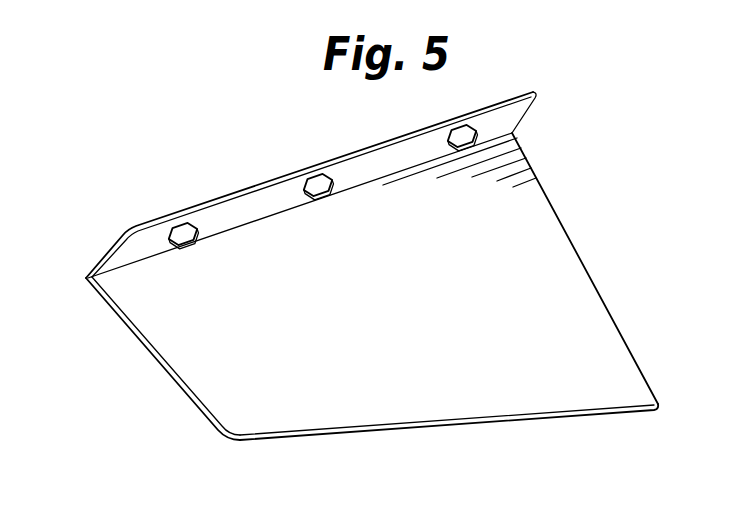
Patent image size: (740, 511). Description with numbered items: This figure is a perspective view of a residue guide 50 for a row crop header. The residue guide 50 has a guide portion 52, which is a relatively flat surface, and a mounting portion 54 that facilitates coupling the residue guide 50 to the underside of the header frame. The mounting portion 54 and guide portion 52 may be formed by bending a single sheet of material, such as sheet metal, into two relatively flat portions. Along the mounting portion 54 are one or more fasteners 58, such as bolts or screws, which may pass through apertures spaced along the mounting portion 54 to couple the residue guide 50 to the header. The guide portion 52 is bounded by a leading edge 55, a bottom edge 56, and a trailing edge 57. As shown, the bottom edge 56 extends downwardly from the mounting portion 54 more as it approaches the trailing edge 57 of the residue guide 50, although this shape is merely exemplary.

The residue guide 50 is at (588, 134).
The guide portion 52 is at (432, 315).
The mounting portion 54 is at (114, 244).
The leading edge 55 is at (141, 351).
The bottom edge 56 is at (455, 431).
The trailing edge 57 is at (573, 240).
The fasteners 58 is at (193, 222).